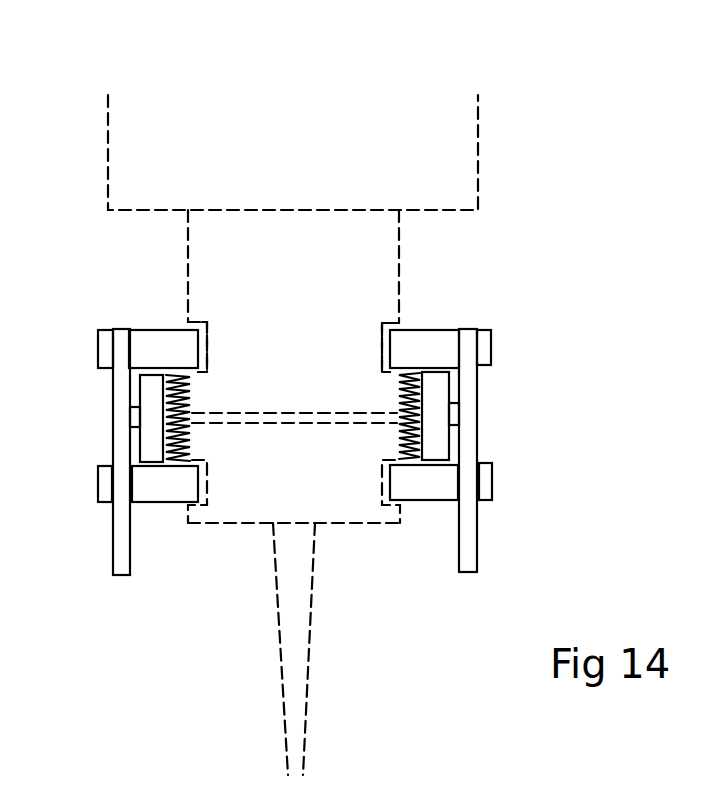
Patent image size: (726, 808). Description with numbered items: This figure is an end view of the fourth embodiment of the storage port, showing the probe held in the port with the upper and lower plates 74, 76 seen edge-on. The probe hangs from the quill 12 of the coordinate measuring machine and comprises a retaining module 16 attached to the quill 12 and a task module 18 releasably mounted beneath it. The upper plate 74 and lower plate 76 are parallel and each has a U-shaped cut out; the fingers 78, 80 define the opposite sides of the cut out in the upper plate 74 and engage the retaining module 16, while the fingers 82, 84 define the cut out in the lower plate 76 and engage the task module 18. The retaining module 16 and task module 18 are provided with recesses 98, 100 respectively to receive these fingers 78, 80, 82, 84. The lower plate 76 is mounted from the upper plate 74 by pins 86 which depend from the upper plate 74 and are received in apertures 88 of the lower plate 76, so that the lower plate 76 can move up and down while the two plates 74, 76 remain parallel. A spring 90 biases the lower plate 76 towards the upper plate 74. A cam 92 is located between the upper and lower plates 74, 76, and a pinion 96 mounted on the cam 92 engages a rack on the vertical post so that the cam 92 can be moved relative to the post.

The quill 12 is at (470, 121).
The retaining module 16 is at (393, 260).
The task module 18 is at (231, 508).
The upper plate 74 is at (495, 347).
The lower plate 76 is at (493, 482).
The finger 78 is at (153, 340).
The finger 80 is at (420, 333).
The finger 82 is at (160, 485).
The finger 84 is at (425, 490).
The pin 86 is at (118, 583).
The aperture 88 is at (103, 503).
The spring 90 is at (428, 392).
The cam 92 is at (155, 442).
The pinion 96 is at (462, 415).
The recess 98 is at (215, 342).
The recess 100 is at (205, 487).